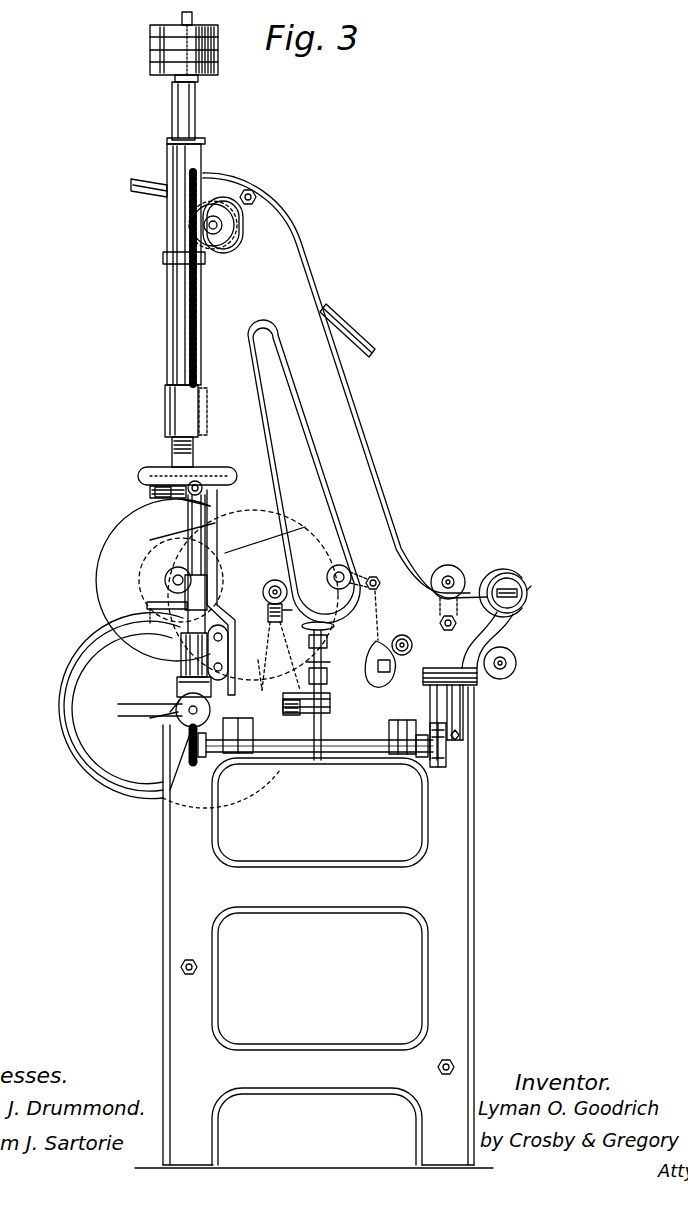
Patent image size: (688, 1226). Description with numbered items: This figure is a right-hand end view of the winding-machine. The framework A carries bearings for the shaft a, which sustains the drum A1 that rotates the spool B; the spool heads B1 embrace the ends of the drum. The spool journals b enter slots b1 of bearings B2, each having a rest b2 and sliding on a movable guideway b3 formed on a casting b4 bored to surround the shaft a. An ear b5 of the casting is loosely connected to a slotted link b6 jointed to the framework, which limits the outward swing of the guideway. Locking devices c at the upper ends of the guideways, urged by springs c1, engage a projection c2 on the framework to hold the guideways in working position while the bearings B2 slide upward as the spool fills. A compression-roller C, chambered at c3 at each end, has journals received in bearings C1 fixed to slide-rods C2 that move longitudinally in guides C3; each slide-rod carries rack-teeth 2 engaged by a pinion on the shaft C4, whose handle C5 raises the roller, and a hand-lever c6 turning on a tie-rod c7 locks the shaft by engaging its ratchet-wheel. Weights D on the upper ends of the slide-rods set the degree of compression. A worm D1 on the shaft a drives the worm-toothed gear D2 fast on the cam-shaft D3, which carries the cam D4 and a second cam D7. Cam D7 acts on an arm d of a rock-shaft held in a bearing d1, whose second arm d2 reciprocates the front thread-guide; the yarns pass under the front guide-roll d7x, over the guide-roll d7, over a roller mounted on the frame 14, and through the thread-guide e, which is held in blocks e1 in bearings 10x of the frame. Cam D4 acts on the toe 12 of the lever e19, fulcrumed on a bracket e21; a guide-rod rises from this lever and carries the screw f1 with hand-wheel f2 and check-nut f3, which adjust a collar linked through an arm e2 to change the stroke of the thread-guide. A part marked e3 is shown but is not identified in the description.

The weights D is at (218, 57).
The guides C3 is at (167, 228).
The rack-teeth 2 is at (201, 313).
The hand-lever c6 is at (137, 183).
The shaft C4 is at (236, 225).
The tie-rod c7 is at (252, 193).
The slide-rods C2 is at (168, 347).
The bearings B2 is at (268, 540).
The handle C5 is at (368, 340).
The bearings C1 is at (165, 400).
The compression-roller C is at (172, 462).
The locking devices c is at (226, 478).
The springs c1 is at (150, 490).
The chambers c3 is at (155, 493).
The projection c2 is at (220, 508).
The spool B is at (175, 575).
The heads B1 is at (205, 510).
The guideway b3 is at (150, 540).
The journals b is at (185, 590).
The slots b1 is at (170, 603).
The rest b2 is at (195, 628).
The casting b4 is at (181, 660).
The ear b5 is at (180, 688).
The slotted link b6 is at (228, 655).
The bearings 10x is at (265, 552).
The frame 14 is at (331, 577).
The blocks e1 is at (285, 580).
The thread-guide e is at (268, 596).
The arm e2 is at (297, 606).
The hand-wheel f2 is at (333, 625).
The screw f1 is at (327, 641).
The check-nut f3 is at (327, 676).
The lever e19 is at (331, 702).
The bracket e21 is at (283, 706).
The rod e3 is at (258, 672).
The worm-toothed gear D2 is at (150, 790).
The drum A1 is at (100, 722).
The worm D1 is at (170, 716).
The shaft a is at (186, 742).
The cam-shaft D3 is at (340, 755).
The cam D4 is at (300, 760).
The toe 12 is at (320, 742).
The cam D7 is at (425, 768).
The arm d is at (441, 714).
The bearing d1 is at (465, 690).
The guide-roll d7 is at (452, 572).
The arm d2 is at (512, 627).
The front guide-roll d7x is at (517, 663).
The framework A is at (163, 882).